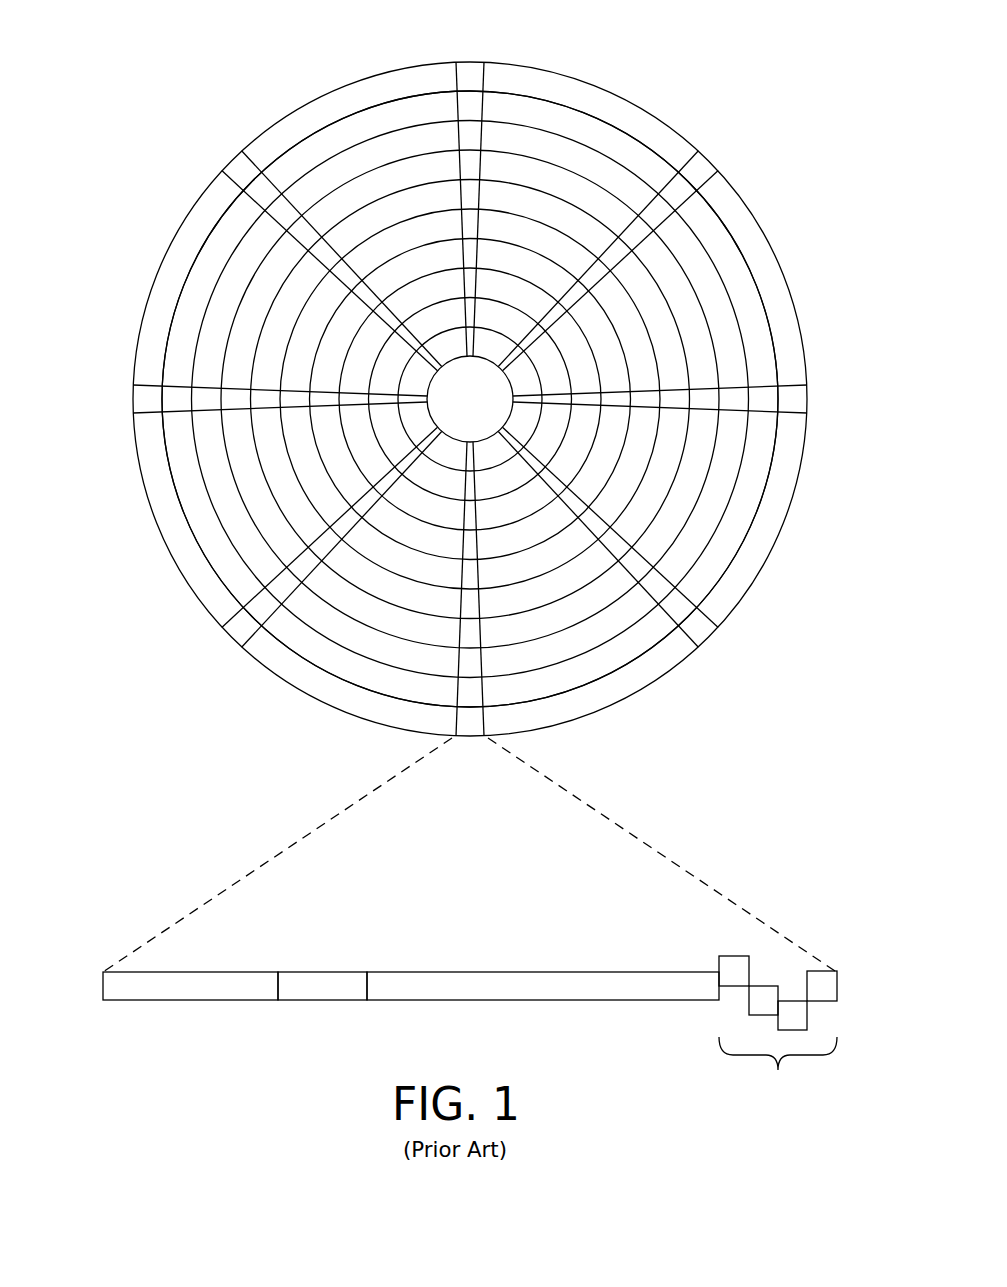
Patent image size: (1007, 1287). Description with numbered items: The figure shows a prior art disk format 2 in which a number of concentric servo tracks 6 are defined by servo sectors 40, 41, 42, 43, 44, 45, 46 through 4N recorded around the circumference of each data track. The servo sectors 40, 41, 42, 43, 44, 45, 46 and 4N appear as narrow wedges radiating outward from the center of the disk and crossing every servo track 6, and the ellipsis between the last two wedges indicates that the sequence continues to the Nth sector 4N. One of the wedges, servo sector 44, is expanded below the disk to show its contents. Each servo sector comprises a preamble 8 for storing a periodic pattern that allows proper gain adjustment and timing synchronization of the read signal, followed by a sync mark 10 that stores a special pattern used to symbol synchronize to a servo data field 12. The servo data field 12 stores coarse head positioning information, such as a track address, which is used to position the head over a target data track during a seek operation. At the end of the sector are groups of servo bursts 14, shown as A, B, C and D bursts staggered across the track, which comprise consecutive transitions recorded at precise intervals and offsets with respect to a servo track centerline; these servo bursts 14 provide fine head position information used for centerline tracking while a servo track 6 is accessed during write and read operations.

The disk format 2 is at (216, 63).
The servo tracks 6 is at (583, 130).
The servo sector 40 is at (472, 72).
The servo sector 41 is at (700, 170).
The servo sector 42 is at (798, 403).
The servo sector 43 is at (700, 630).
The servo sector 44 is at (320, 812).
The servo sector 45 is at (237, 632).
The servo sector 46 is at (140, 398).
The servo sector 4N is at (238, 168).
The preamble 8 is at (172, 1001).
The sync mark 10 is at (322, 1001).
The servo data field 12 is at (530, 1001).
The servo bursts 14 is at (700, 934).